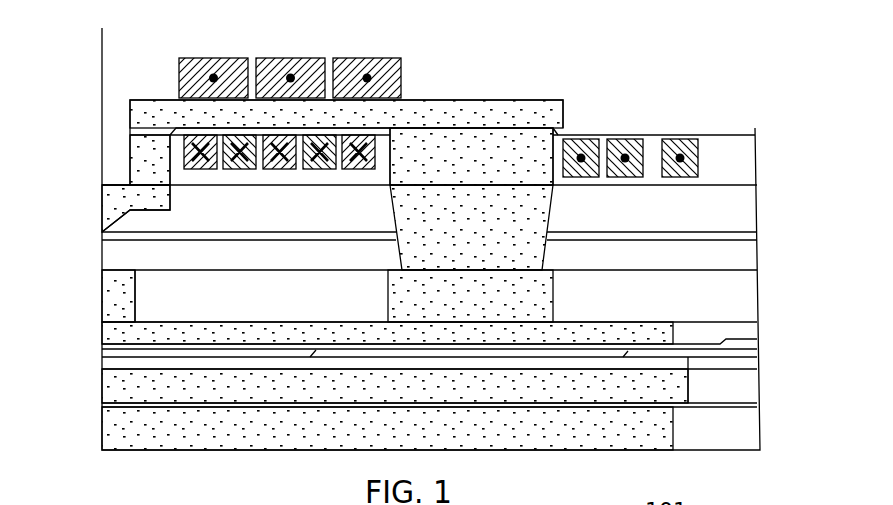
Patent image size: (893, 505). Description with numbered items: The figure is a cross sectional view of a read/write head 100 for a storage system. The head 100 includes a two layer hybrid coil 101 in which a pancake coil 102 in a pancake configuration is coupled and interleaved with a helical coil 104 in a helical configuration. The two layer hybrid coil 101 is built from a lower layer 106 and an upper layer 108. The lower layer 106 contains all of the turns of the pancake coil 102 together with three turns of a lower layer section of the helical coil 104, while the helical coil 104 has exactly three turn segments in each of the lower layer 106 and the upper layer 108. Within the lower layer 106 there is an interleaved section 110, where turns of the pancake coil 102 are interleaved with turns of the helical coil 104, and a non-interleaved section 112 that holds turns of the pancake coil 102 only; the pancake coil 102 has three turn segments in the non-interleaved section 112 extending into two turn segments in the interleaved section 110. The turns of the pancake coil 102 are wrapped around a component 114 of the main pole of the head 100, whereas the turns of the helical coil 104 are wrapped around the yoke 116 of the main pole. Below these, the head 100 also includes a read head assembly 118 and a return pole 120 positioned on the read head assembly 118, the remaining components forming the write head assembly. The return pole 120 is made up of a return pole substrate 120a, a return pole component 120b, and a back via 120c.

The read/write head 100 is at (663, 52).
The two layer hybrid coil 101 is at (192, 46).
The pancake coil 102 is at (698, 163).
The helical coil 104 is at (290, 58).
The lower layer 106 is at (100, 135).
The upper layer 108 is at (100, 60).
The interleaved section 110 is at (375, 171).
The non-interleaved section 112 is at (698, 180).
The component of the main pole 114 is at (538, 138).
The yoke 116 is at (469, 100).
The read head assembly 118 is at (100, 348).
The return pole 120 is at (100, 272).
The return pole substrate 120a is at (650, 325).
The return pole component 120b is at (553, 301).
The back via 120c is at (545, 257).